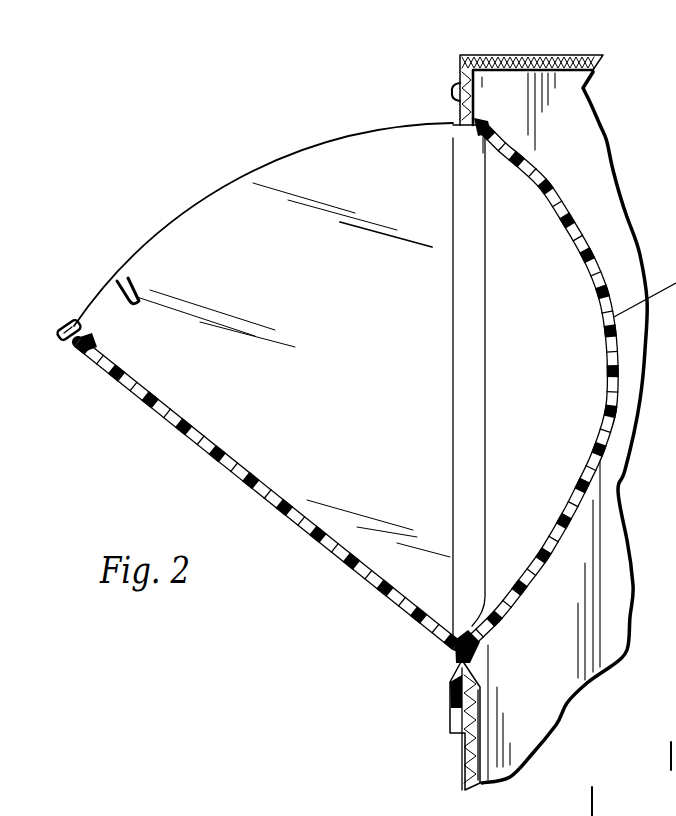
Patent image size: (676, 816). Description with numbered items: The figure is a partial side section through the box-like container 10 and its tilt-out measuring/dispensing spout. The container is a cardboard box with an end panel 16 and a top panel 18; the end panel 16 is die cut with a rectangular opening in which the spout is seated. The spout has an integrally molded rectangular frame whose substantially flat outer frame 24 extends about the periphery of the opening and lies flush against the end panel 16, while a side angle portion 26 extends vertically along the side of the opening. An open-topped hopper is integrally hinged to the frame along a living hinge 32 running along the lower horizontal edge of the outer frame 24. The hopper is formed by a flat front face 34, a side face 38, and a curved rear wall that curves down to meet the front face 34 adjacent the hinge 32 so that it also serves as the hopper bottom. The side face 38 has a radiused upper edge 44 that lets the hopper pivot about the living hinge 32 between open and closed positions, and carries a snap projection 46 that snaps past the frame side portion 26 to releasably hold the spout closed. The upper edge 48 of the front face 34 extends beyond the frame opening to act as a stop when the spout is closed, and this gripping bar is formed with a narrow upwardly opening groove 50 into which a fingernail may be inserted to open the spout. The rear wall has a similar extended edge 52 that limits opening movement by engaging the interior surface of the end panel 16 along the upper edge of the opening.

The box-like container 10 is at (531, 49).
The end panel 16 is at (452, 760).
The top panel 18 is at (572, 55).
The outer frame 24 is at (452, 107).
The side angle portion 26 is at (485, 390).
The living hinge 32 is at (455, 655).
The front face 34 is at (278, 505).
The side face 38 is at (210, 217).
The radiused upper edge 44 is at (170, 226).
The snap projection 46 is at (138, 288).
The upper edge 48 is at (70, 352).
The groove 50 is at (62, 327).
The extended edge 52 is at (484, 130).